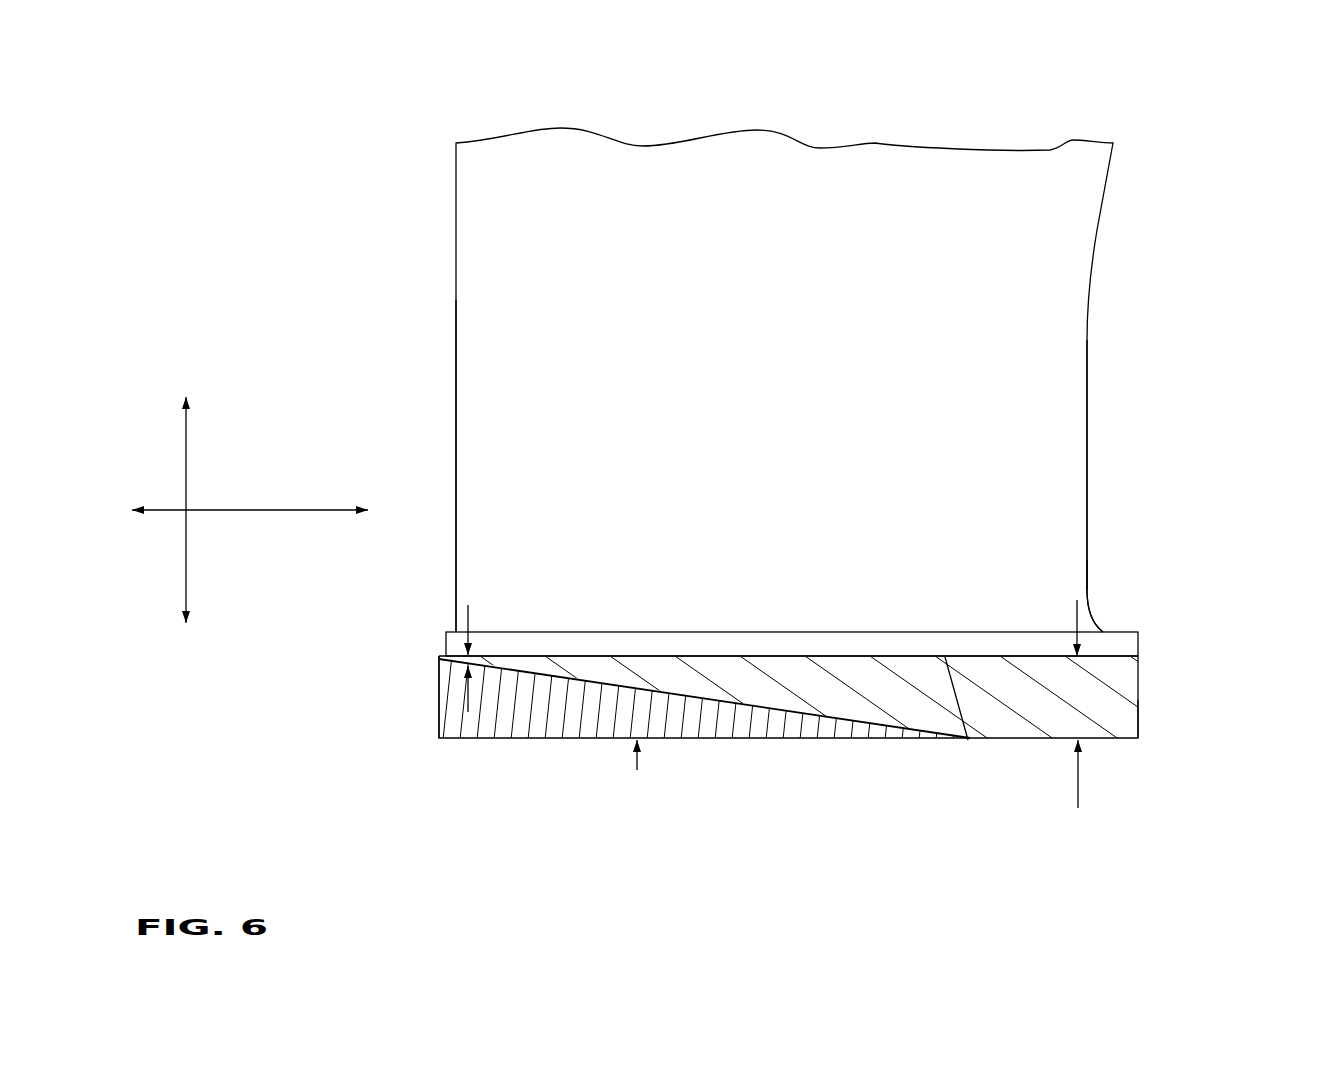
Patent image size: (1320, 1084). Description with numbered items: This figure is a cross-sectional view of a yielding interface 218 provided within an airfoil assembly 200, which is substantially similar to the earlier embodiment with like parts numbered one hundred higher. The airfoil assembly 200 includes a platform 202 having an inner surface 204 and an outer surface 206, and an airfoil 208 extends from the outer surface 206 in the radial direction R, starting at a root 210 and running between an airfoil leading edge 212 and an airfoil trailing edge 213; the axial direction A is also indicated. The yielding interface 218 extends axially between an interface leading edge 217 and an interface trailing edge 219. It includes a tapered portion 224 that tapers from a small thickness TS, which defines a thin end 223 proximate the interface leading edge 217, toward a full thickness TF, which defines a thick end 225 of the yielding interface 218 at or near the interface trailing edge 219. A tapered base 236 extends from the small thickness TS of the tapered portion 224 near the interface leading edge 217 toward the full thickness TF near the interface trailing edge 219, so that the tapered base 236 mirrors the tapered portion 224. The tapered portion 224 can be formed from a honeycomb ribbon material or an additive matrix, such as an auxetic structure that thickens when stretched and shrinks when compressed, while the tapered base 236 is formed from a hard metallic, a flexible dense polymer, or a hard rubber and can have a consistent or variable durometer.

The airfoil assembly 200 is at (397, 143).
The platform 202 is at (537, 643).
The inner surface 204 is at (968, 740).
The outer surface 206 is at (982, 632).
The airfoil 208 is at (592, 291).
The root 210 is at (1102, 628).
The airfoil leading edge 212 is at (455, 432).
The airfoil trailing edge 213 is at (1087, 447).
The interface leading edge 217 is at (440, 690).
The yielding interface 218 is at (637, 770).
The interface trailing edge 219 is at (1138, 706).
The thin end 223 is at (472, 665).
The tapered portion 224 is at (1072, 708).
The thick end 225 is at (1131, 680).
The tapered base 236 is at (703, 717).
The small thickness TS is at (468, 700).
The full thickness TF is at (1078, 780).
The radial direction R is at (188, 470).
The axial direction A is at (275, 512).